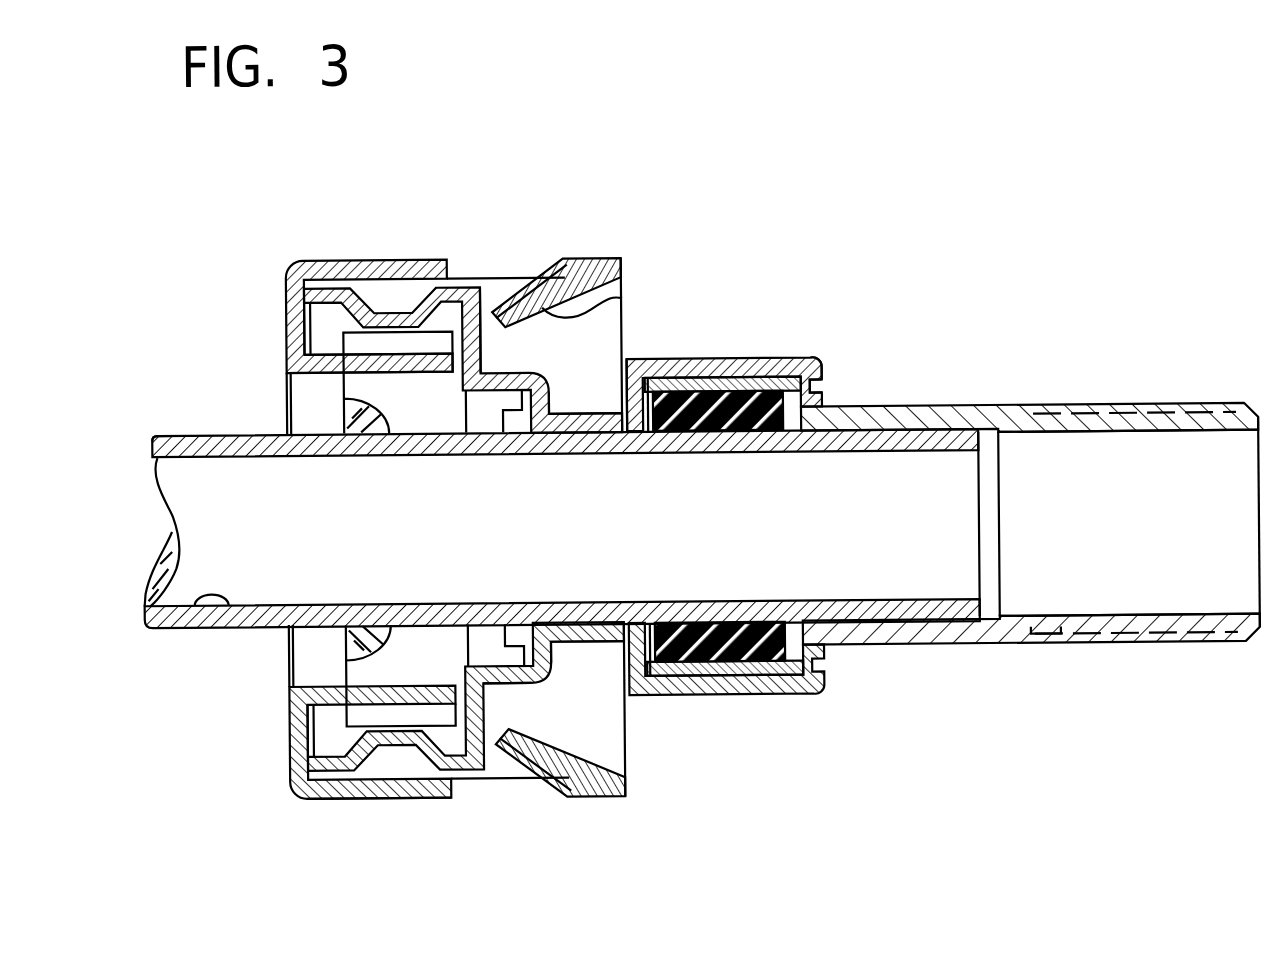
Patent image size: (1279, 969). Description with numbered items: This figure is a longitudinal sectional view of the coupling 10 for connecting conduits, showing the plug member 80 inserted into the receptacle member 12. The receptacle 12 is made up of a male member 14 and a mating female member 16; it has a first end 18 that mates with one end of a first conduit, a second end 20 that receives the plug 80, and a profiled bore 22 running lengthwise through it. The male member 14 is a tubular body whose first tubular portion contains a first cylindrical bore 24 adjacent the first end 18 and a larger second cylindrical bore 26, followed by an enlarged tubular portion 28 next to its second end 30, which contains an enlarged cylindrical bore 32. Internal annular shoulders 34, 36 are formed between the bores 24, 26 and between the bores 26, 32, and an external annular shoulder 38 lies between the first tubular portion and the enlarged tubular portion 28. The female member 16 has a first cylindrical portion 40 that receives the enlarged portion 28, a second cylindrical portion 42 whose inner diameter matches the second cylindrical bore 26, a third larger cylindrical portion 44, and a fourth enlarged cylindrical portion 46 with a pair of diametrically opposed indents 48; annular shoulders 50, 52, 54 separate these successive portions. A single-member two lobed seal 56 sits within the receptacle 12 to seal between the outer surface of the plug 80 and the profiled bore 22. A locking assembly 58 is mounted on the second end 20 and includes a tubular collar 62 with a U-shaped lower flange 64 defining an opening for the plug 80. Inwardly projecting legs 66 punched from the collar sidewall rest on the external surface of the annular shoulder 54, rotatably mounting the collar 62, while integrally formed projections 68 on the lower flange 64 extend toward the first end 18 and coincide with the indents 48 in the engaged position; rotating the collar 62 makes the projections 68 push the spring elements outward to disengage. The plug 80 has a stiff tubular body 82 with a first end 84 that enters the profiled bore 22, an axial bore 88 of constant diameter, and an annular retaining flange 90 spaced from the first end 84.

The coupling 10 is at (279, 241).
The receptacle member 12 is at (594, 232).
The male member 14 is at (1032, 408).
The female member 16 is at (753, 358).
The first end 18 is at (1185, 408).
The second end 20 is at (305, 645).
The profiled bore 22 is at (1093, 617).
The first cylindrical bore 24 is at (1163, 437).
The second cylindrical bore 26 is at (905, 617).
The enlarged tubular portion 28 is at (790, 695).
The second end 30 is at (640, 360).
The enlarged cylindrical bore 32 is at (730, 660).
The internal annular shoulder 34 is at (970, 445).
The internal annular shoulder 36 is at (818, 357).
The external annular shoulder 38 is at (823, 384).
The first cylindrical portion 40 is at (655, 698).
The second cylindrical portion 42 is at (573, 412).
The third cylindrical portion 44 is at (503, 683).
The fourth enlarged cylindrical portion 46 is at (357, 268).
The indents 48 is at (407, 740).
The annular shoulder 50 is at (628, 665).
The annular shoulder 52 is at (548, 408).
The annular shoulder 54 is at (485, 342).
The two lobed seal 56 is at (697, 377).
The locking assembly 58 is at (331, 795).
The tubular collar 62 is at (322, 258).
The U-shaped lower flange 64 is at (292, 770).
The inwardly projecting legs 66 is at (624, 298).
The projections 68 is at (330, 355).
The plug member 80 is at (149, 523).
The tubular body 82 is at (168, 432).
The first end 84 is at (977, 553).
The axial bore 88 is at (182, 627).
The annular retaining flange 90 is at (467, 412).